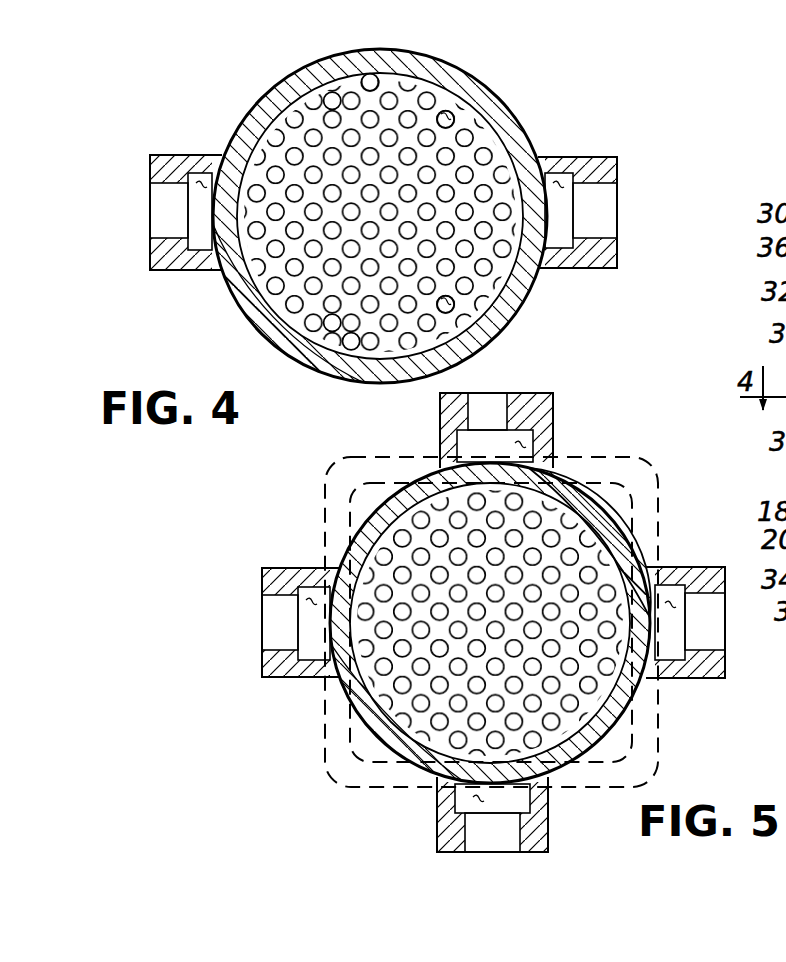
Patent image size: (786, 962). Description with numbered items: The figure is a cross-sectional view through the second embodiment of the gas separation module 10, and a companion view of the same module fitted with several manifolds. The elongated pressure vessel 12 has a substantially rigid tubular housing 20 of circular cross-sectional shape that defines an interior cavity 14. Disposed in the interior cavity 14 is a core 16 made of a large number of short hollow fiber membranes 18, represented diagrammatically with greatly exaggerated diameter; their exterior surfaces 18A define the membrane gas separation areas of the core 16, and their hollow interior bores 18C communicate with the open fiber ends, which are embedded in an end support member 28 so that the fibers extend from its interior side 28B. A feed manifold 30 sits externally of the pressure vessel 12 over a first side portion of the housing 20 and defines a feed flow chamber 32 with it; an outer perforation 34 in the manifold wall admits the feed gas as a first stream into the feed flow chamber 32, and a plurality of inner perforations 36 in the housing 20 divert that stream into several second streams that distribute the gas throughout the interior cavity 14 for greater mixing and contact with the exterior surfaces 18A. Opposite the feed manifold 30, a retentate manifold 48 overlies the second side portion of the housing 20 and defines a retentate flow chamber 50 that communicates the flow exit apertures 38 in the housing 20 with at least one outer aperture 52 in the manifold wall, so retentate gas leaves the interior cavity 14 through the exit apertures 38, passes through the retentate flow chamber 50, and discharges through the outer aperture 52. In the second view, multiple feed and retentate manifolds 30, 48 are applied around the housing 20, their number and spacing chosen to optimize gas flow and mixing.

In FIG. 4, the gas separation module 10 is at (613, 66).
In FIG. 5, the gas separation module 10 is at (618, 447).
In FIG. 4, the pressure vessel 12 is at (220, 286).
In FIG. 4, the interior cavity 14 is at (263, 256).
In FIG. 5, the interior cavity 14 is at (597, 704).
In FIG. 4, the core 16 is at (492, 118).
In FIG. 5, the core 16 is at (557, 500).
In FIG. 4, the hollow fiber membranes 18 is at (329, 82).
In FIG. 4, the exterior surfaces 18A is at (372, 70).
In FIG. 4, the hollow interior bores 18C is at (487, 124).
In FIG. 4, the tubular housing 20 is at (536, 290).
In FIG. 5, the tubular housing 20 is at (378, 731).
In FIG. 4, the end support member 28 is at (416, 80).
In FIG. 4, the interior side 28B is at (264, 157).
In FIG. 4, the feed manifold 30 is at (162, 151).
In FIG. 5, the feed manifold 30 is at (436, 425).
In FIG. 4, the feed flow chamber 32 is at (207, 180).
In FIG. 5, the feed flow chamber 32 is at (528, 438).
In FIG. 4, the outer perforation 34 is at (172, 183).
In FIG. 5, the outer perforation 34 is at (535, 422).
In FIG. 4, the inner perforations 36 is at (224, 211).
In FIG. 5, the inner perforations 36 is at (491, 458).
In FIG. 4, the flow exit apertures 38 is at (541, 217).
In FIG. 5, the flow exit apertures 38 is at (662, 625).
In FIG. 4, the retentate manifold 48 is at (601, 156).
In FIG. 5, the retentate manifold 48 is at (707, 566).
In FIG. 4, the retentate flow chamber 50 is at (563, 180).
In FIG. 5, the retentate flow chamber 50 is at (672, 603).
In FIG. 4, the outer aperture 52 is at (598, 242).
In FIG. 5, the outer aperture 52 is at (702, 672).